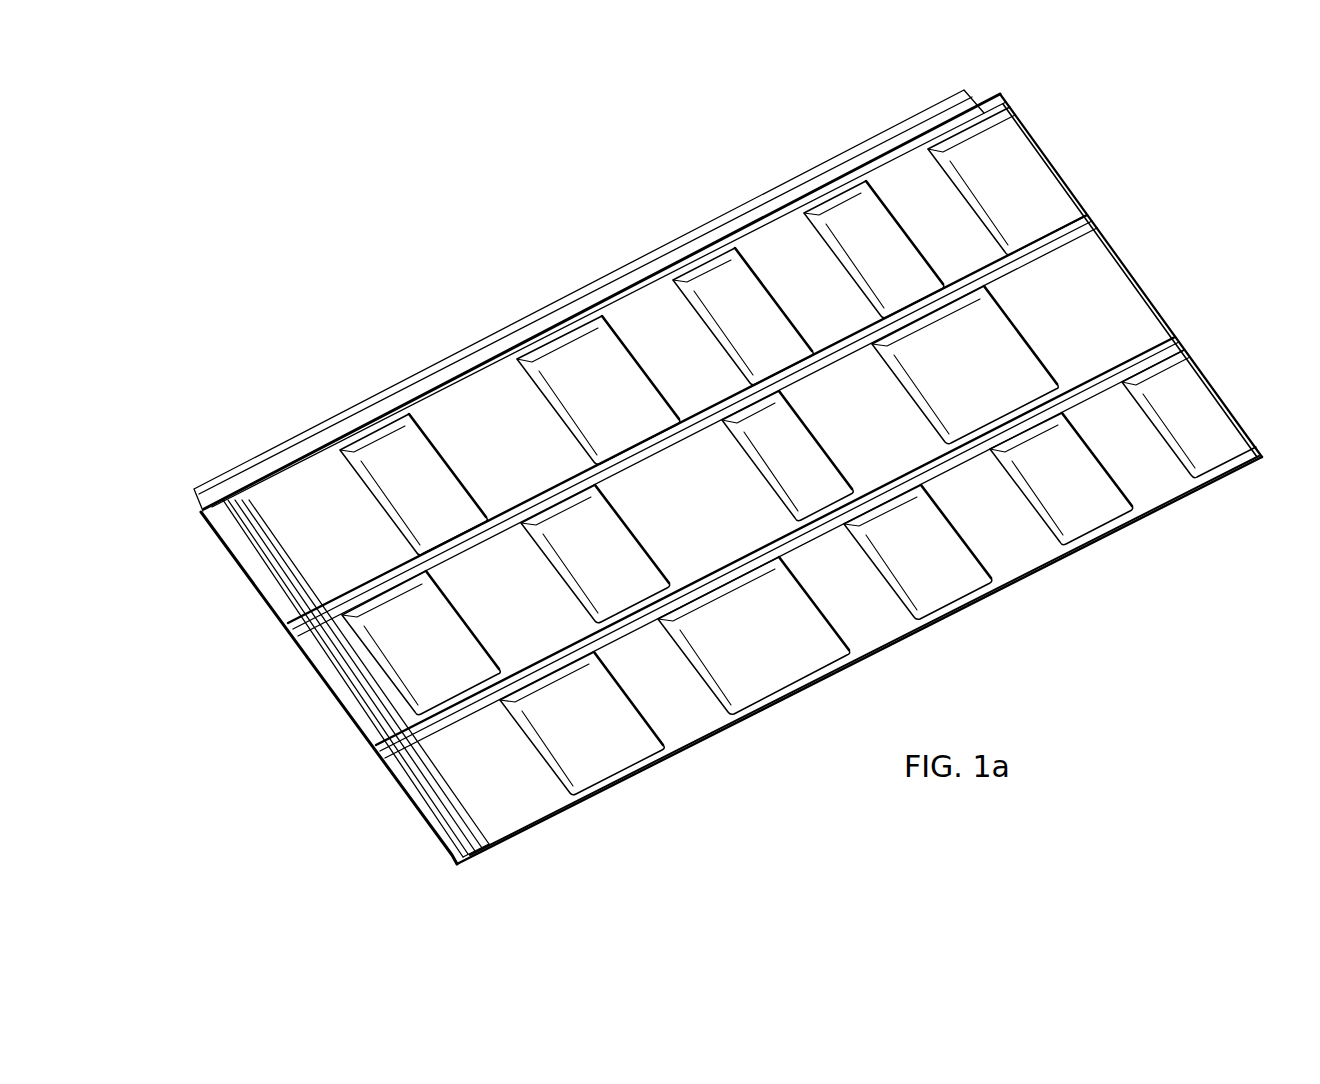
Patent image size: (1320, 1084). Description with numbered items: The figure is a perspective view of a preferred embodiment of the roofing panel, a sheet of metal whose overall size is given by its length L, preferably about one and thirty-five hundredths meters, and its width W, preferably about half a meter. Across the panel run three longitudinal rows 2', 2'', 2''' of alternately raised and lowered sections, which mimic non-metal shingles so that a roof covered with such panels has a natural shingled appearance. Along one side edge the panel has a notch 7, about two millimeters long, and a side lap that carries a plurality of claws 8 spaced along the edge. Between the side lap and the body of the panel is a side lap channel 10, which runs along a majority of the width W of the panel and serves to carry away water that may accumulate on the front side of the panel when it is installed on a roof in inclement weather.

The longitudinal row of raised and lowered sections 2' is at (1009, 171).
The longitudinal row of raised and lowered sections 2'' is at (1015, 320).
The longitudinal row of raised and lowered sections 2''' is at (1189, 399).
The notch 7 is at (197, 512).
The claws 8 is at (291, 630).
The side lap channel 10 is at (483, 853).
The width W is at (330, 697).
The length L is at (893, 650).